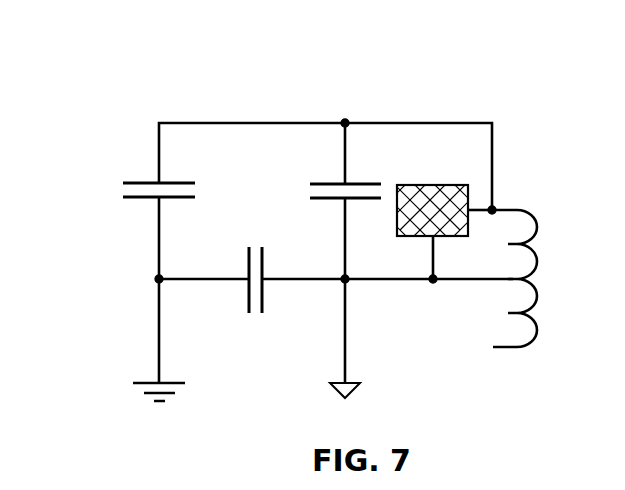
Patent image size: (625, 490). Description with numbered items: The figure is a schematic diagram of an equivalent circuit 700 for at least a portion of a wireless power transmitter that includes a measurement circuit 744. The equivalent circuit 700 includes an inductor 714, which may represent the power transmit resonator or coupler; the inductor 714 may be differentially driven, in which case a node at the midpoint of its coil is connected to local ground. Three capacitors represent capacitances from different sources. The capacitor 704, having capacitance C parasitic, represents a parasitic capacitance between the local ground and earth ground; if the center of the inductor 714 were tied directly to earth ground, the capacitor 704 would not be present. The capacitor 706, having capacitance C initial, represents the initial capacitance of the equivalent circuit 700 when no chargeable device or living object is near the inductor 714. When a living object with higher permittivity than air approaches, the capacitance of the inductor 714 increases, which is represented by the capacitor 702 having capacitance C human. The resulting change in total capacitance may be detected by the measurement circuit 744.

The equivalent circuit 700 is at (138, 70).
The capacitor 702 is at (147, 200).
The capacitor 704 is at (262, 312).
The capacitor 706 is at (333, 183).
The measurement circuit 744 is at (406, 184).
The inductor 714 is at (517, 357).